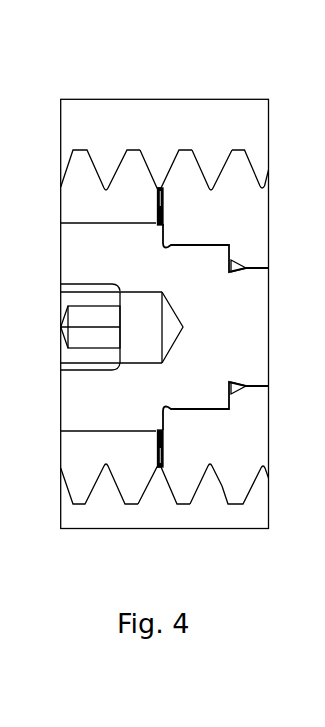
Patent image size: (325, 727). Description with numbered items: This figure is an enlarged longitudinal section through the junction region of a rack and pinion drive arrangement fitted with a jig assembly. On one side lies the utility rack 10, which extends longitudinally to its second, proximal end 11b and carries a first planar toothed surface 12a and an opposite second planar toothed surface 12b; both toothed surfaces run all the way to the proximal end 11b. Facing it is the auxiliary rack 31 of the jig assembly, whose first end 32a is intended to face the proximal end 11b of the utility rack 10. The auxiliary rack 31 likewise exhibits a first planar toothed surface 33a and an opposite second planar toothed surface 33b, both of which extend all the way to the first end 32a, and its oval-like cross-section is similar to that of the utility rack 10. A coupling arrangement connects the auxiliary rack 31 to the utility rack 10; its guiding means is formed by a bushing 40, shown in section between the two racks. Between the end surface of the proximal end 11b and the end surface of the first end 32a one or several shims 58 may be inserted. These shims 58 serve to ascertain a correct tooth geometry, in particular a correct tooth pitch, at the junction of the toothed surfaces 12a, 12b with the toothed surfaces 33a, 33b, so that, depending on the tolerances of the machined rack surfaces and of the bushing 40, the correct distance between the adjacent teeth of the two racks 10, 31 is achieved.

The utility rack 10 is at (260, 173).
The auxiliary rack 31 is at (66, 170).
The first planar toothed surface 33a is at (108, 187).
The shim 58 is at (160, 186).
The first planar toothed surface 12a is at (212, 187).
The bushing 40 is at (75, 434).
The second planar toothed surface 33b is at (108, 469).
The second end 11b is at (155, 438).
The first end 32a is at (162, 448).
The second planar toothed surface 12b is at (218, 488).